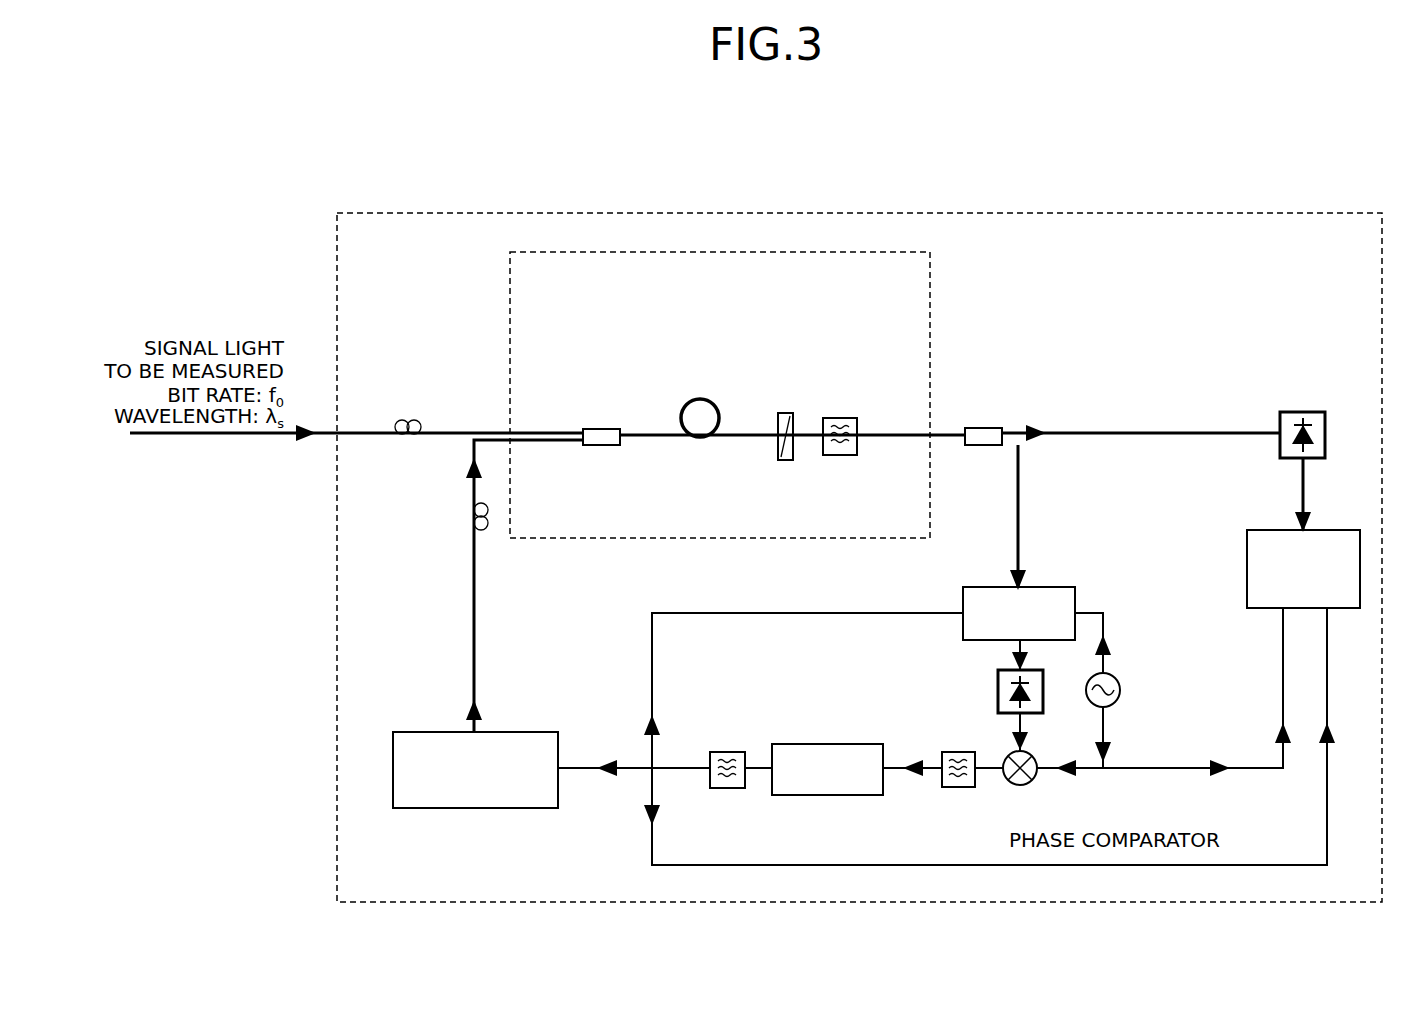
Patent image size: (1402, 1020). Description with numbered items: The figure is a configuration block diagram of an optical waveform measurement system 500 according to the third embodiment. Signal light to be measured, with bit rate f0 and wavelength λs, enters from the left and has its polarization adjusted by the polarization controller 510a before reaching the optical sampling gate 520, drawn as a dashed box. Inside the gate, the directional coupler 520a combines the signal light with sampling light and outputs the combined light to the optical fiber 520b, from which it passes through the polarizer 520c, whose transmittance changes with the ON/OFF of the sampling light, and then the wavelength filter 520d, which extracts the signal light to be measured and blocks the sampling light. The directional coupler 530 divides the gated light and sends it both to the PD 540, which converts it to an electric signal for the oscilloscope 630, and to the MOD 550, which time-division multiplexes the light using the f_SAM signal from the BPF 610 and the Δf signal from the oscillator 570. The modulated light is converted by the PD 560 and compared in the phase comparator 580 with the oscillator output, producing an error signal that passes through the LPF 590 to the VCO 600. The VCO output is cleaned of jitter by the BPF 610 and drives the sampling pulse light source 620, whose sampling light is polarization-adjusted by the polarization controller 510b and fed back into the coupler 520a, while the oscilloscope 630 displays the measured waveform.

The optical waveform measurement system 500 is at (1077, 205).
The polarization controller 510a is at (408, 419).
The polarization controller 510b is at (487, 530).
The optical sampling gate 520 is at (931, 290).
The directional coupler 520a is at (598, 430).
The optical fiber 520b is at (700, 398).
The polarizer 520c is at (785, 412).
The wavelength filter 520d is at (842, 484).
The directional coupler 530 is at (983, 428).
The photo diode (PD) 540 is at (1300, 411).
The MOD 550 is at (1034, 589).
The photo diode (PD) 560 is at (1043, 708).
The oscillator 570 is at (1135, 676).
The phase comparator 580 is at (1022, 786).
The LPF 590 is at (958, 788).
The VCO 600 is at (826, 744).
The BPF 610 is at (726, 752).
The sampling pulse light source 620 is at (524, 731).
The oscilloscope 630 is at (1270, 530).